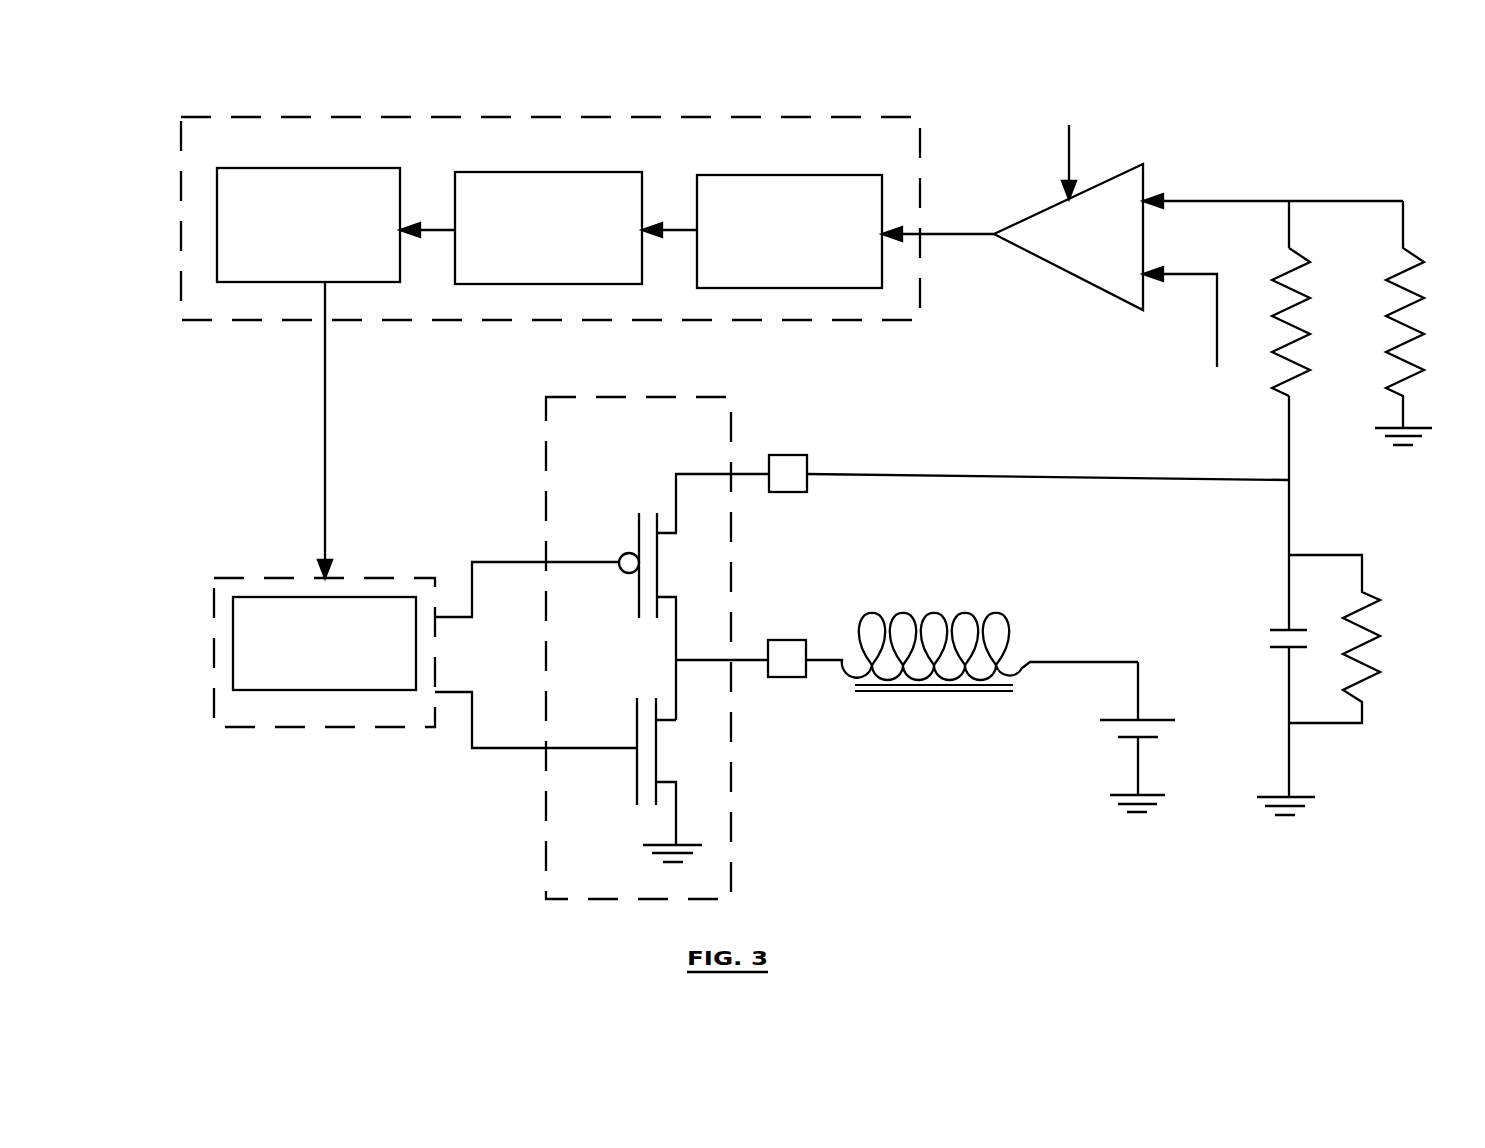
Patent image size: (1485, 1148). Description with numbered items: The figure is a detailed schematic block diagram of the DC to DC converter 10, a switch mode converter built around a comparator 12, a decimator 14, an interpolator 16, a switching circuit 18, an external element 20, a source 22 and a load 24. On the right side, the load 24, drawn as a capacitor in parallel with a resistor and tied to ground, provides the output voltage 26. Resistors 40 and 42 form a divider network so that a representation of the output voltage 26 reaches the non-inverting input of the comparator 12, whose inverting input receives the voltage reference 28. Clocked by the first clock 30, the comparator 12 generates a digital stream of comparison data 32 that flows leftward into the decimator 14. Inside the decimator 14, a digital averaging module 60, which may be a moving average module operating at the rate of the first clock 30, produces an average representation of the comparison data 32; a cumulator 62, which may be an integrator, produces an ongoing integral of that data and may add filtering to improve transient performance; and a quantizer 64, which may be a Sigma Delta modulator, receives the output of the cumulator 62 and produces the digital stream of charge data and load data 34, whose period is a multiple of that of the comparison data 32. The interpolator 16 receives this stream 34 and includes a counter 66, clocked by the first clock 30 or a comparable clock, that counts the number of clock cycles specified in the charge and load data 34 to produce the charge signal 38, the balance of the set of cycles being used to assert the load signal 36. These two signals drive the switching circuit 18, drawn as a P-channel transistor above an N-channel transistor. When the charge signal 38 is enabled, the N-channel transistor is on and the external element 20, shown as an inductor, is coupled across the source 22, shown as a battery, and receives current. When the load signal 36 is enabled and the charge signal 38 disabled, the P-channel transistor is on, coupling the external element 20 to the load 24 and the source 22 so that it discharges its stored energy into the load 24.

The DC to DC converter 10 is at (872, 877).
The comparator 12 is at (1079, 252).
The decimator 14 is at (550, 218).
The interpolator 16 is at (324, 652).
The switching circuit 18 is at (676, 648).
The external element 20 is at (972, 682).
The source 22 is at (1092, 737).
The load 24 is at (1285, 685).
The output voltage 26 is at (1113, 374).
The voltage reference 28 is at (1199, 334).
The first clock 30 is at (1070, 146).
The digital stream of comparison data 32 is at (957, 234).
The digital stream of charge data and load data 34 is at (422, 430).
The load signal 36 is at (521, 557).
The charge signal 38 is at (528, 751).
The resistor 40 is at (1315, 322).
The resistor 42 is at (1423, 323).
The digital averaging module 60 is at (762, 231).
The cumulator 62 is at (521, 228).
The quantizer 64 is at (308, 225).
The counter 66 is at (324, 643).